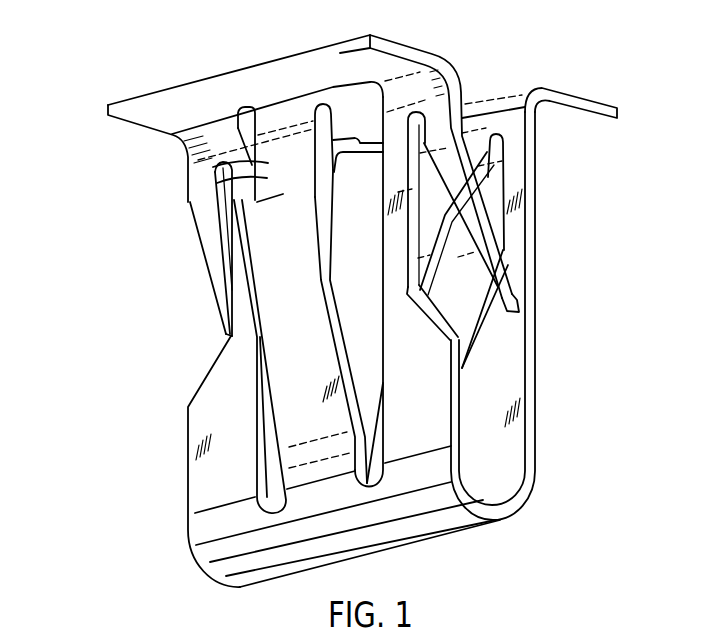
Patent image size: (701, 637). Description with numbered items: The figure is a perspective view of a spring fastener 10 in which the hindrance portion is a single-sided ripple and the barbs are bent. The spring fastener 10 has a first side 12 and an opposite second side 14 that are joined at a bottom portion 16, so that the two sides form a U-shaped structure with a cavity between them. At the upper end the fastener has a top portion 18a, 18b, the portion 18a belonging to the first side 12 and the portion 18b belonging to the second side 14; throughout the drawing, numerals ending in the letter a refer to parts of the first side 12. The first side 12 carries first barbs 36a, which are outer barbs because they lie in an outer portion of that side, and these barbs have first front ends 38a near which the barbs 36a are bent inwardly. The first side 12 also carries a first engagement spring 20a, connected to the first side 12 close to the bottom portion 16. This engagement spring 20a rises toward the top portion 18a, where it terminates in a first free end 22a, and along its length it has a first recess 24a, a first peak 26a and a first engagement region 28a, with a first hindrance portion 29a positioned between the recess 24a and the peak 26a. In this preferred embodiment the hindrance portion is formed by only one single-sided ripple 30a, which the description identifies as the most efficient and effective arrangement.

The spring fastener 10 is at (60, 108).
The first side 12 is at (198, 417).
The second side 14 is at (512, 368).
The bottom portion 16 is at (428, 534).
The top portion 18a is at (234, 100).
The top portion 18b is at (578, 124).
The first engagement spring 20a is at (282, 356).
The first free end 22a is at (277, 110).
The first recess 24a is at (306, 128).
The first peak 26a is at (242, 222).
The first engagement region 28a is at (213, 167).
The first hindrance portion 29a is at (217, 183).
The single-sided ripple 30a is at (278, 196).
The first barbs 36a is at (213, 253).
The first front ends 38a is at (226, 335).